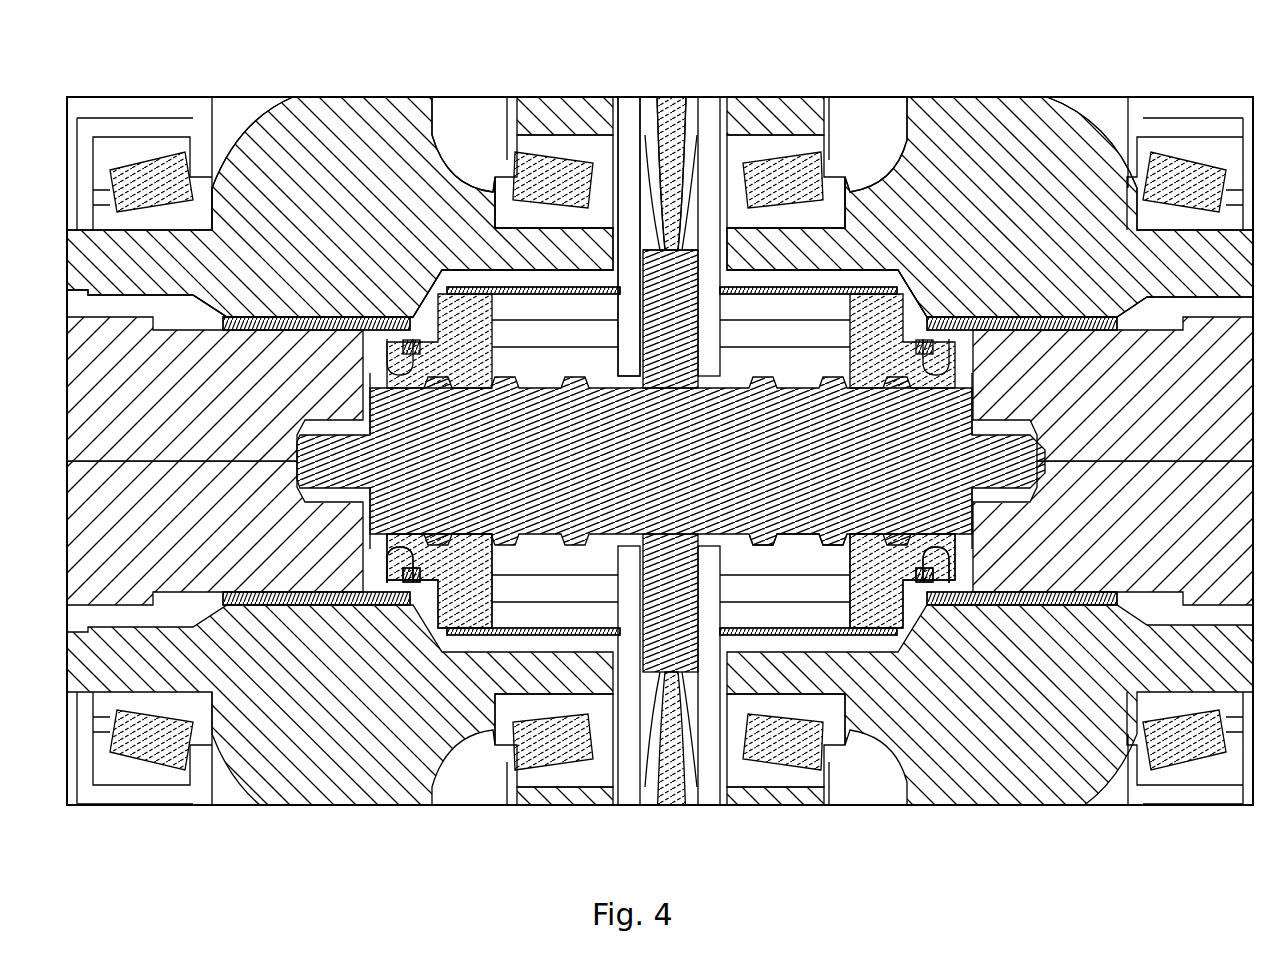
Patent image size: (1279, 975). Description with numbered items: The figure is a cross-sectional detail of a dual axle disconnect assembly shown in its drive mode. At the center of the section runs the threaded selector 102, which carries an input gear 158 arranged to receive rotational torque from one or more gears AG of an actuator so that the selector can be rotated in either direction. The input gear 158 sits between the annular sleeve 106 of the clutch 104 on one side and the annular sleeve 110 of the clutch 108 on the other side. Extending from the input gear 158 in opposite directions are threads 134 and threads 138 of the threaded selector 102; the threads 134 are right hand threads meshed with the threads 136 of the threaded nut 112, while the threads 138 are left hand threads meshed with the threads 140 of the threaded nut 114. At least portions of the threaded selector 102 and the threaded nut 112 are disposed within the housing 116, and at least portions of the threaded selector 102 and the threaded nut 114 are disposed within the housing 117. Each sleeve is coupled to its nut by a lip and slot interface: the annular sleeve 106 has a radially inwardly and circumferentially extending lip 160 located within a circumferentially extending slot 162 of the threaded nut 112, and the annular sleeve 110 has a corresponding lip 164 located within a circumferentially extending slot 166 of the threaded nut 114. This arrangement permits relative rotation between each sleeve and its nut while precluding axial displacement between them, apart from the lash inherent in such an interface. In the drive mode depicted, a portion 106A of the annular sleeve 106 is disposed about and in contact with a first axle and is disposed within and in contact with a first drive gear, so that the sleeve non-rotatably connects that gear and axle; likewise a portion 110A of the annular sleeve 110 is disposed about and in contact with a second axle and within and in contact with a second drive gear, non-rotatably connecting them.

The threaded selector 102 is at (686, 244).
The gears of actuator A AG is at (668, 240).
The input gear 158 is at (636, 214).
The annular sleeve 106 is at (305, 305).
The clutch 104 is at (391, 292).
The lip 160 is at (388, 288).
The threaded nut 112 is at (468, 287).
The threaded nut 114 is at (870, 290).
The lip 164 is at (947, 293).
The clutch 108 is at (1032, 308).
The annular sleeve 110 is at (1033, 307).
The portion of annular sleeve 106A is at (273, 606).
The circumferentially extending slot 162 is at (393, 560).
The threads 136 is at (477, 538).
The housing 116 is at (527, 636).
The threads 134 is at (572, 536).
The threads 138 is at (757, 538).
The housing 117 is at (810, 636).
The threads 140 is at (860, 538).
The circumferentially extending slot 166 is at (947, 560).
The portion of annular sleeve 110A is at (1063, 606).